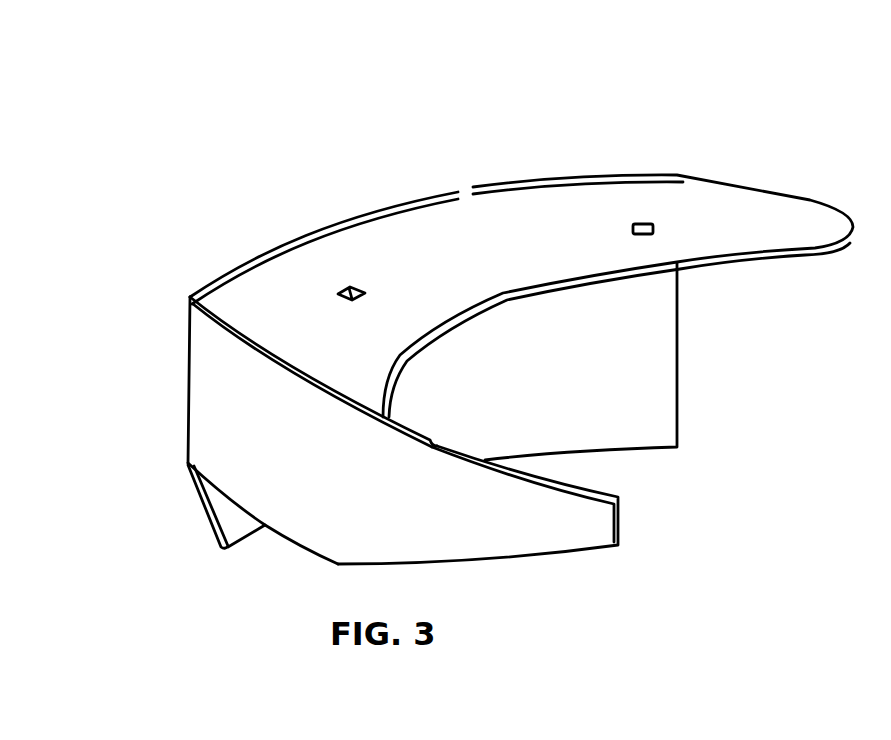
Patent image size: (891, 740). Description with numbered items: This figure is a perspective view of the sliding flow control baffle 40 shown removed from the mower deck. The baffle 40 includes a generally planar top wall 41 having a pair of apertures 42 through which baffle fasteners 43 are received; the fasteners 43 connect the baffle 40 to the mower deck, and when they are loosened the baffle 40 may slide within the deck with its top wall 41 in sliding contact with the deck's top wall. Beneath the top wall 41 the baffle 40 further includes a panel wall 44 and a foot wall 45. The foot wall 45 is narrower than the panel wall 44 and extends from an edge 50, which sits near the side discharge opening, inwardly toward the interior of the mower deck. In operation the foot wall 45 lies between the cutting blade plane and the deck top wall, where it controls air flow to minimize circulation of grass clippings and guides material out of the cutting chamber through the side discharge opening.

The sliding flow control baffle 40 is at (530, 50).
The top wall 41 is at (537, 200).
The apertures 42 is at (347, 282).
The baffle fasteners 43 is at (650, 222).
The panel wall 44 is at (643, 360).
The foot wall 45 is at (597, 527).
The edge 50 is at (190, 322).